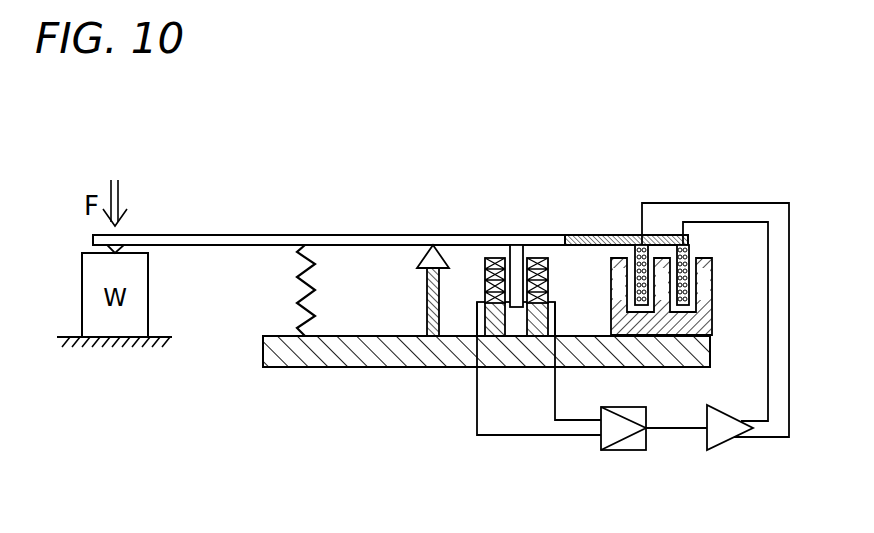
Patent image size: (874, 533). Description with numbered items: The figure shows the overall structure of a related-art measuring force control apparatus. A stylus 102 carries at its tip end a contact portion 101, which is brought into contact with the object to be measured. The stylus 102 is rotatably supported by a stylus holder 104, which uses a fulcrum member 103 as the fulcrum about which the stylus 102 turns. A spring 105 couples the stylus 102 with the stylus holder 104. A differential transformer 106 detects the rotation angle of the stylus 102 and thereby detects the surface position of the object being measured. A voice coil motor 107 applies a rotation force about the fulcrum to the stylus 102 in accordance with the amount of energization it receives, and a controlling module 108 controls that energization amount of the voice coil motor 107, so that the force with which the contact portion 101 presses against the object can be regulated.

The contact portion 101 is at (128, 247).
The stylus 102 is at (357, 233).
The fulcrum member 103 is at (424, 250).
The stylus holder 104 is at (326, 369).
The spring 105 is at (297, 277).
The differential transformer 106 is at (548, 282).
The voice coil motor 107 is at (727, 275).
The controlling module 108 is at (677, 455).